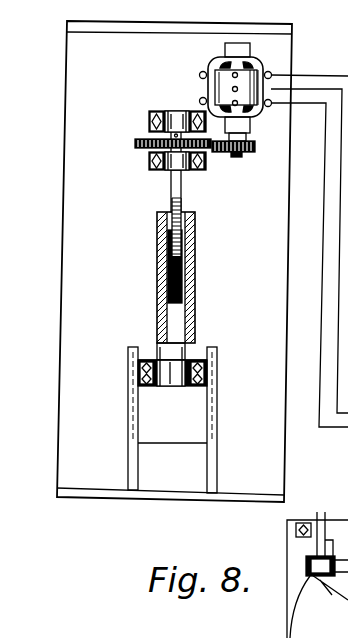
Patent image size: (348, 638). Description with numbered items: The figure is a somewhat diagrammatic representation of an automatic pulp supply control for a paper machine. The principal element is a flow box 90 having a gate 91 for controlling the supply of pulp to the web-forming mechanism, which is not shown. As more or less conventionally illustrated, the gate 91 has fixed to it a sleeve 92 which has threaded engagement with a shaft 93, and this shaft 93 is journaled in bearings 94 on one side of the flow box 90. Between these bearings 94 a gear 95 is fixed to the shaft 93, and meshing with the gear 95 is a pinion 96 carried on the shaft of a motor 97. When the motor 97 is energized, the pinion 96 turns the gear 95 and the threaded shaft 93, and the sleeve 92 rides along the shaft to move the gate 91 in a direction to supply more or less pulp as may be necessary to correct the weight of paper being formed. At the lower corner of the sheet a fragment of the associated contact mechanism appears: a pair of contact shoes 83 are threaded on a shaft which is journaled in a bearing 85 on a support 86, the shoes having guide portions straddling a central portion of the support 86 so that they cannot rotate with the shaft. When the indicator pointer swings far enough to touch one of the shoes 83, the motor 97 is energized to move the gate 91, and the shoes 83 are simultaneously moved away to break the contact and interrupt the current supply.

The flow box 90 is at (70, 313).
The gate 91 is at (155, 418).
The sleeve 92 is at (196, 287).
The shaft 93 is at (186, 199).
The bearings 94 is at (166, 111).
The gear 95 is at (135, 143).
The pinion 96 is at (252, 152).
The motor 97 is at (261, 62).
The bearing 85 is at (320, 556).
The support 86 is at (332, 548).
The contact shoes 83 is at (339, 626).